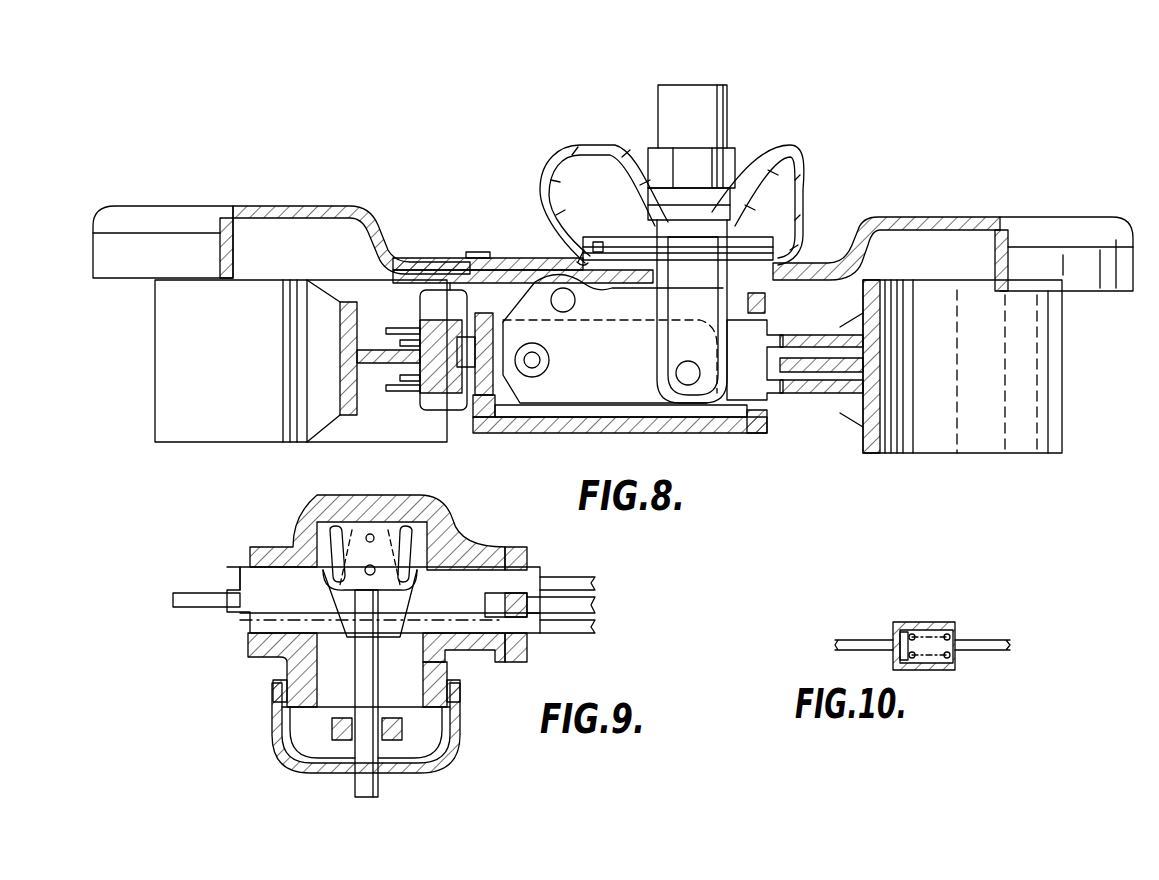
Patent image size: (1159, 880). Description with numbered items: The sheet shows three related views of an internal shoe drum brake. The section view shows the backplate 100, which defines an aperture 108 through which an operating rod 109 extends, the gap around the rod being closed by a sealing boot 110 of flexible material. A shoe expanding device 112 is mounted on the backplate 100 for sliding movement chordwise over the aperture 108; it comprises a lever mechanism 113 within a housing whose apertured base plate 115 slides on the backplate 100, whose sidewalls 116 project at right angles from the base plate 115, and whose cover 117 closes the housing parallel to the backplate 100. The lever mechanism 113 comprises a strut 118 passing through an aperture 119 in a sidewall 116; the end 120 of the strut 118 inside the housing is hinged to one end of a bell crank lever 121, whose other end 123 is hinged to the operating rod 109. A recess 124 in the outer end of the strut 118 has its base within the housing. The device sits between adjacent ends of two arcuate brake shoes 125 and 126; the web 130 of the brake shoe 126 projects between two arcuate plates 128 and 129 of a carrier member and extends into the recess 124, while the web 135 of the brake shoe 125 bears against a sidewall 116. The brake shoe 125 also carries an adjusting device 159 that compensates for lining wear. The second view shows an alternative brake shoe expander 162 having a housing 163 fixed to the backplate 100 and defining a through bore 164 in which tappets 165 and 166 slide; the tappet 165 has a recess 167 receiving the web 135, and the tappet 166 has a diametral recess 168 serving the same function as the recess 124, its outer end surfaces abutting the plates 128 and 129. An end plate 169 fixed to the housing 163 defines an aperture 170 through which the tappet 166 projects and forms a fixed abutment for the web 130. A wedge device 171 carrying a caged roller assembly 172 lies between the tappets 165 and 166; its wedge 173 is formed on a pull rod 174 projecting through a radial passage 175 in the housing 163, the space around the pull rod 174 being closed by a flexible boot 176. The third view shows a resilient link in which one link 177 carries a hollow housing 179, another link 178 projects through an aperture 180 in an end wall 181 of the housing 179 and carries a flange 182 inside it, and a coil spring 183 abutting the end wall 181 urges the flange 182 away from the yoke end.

In FIG. 8, the backplate 100 is at (448, 259).
In FIG. 8, the aperture 108 is at (505, 270).
In FIG. 8, the operating rod 109 is at (705, 116).
In FIG. 8, the sealing boot 110 is at (803, 176).
In FIG. 8, the shoe expanding device 112 is at (815, 246).
In FIG. 8, the lever mechanism 113 is at (618, 389).
In FIG. 8, the base plate 115 is at (393, 277).
In FIG. 8, the sidewalls 116 is at (490, 433).
In FIG. 8, the cover 117 is at (640, 432).
In FIG. 8, the strut 118 is at (770, 322).
In FIG. 8, the aperture 119 is at (752, 430).
In FIG. 8, the end of the strut 120 is at (540, 366).
In FIG. 8, the bell crank lever 121 is at (535, 284).
In FIG. 8, the other end of the bell crank lever 123 is at (690, 385).
In FIG. 8, the recess 124 is at (770, 402).
In FIG. 8, the arcuate brake shoe 125 is at (326, 369).
In FIG. 8, the arcuate brake shoe 126 is at (880, 396).
In FIG. 8, the arcuate plate 128 is at (817, 337).
In FIG. 9, the arcuate plate 128 is at (580, 581).
In FIG. 8, the arcuate plate 129 is at (832, 395).
In FIG. 9, the arcuate plate 129 is at (578, 640).
In FIG. 8, the web 130 is at (840, 368).
In FIG. 9, the web 130 is at (590, 606).
In FIG. 8, the web 135 is at (377, 350).
In FIG. 9, the web 135 is at (206, 595).
In FIG. 8, the adjusting device 159 is at (435, 395).
In FIG. 9, the brake shoe expander 162 is at (452, 543).
In FIG. 9, the housing 163 is at (322, 506).
In FIG. 9, the through bore 164 is at (290, 546).
In FIG. 9, the tappet 165 is at (245, 580).
In FIG. 9, the tappet 166 is at (460, 660).
In FIG. 9, the recess 167 is at (245, 640).
In FIG. 9, the diametral recess 168 is at (508, 662).
In FIG. 9, the end plate 169 is at (525, 558).
In FIG. 9, the aperture 170 is at (522, 650).
In FIG. 9, the wedge device 171 is at (360, 592).
In FIG. 9, the caged roller assembly 172 is at (410, 520).
In FIG. 9, the wedge 173 is at (370, 520).
In FIG. 9, the pull rod 174 is at (355, 760).
In FIG. 9, the radial passage 175 is at (278, 690).
In FIG. 9, the boot 176 is at (458, 748).
In FIG. 10, the link 177 is at (868, 652).
In FIG. 10, the link 178 is at (1000, 652).
In FIG. 10, the hollow housing 179 is at (915, 625).
In FIG. 10, the aperture 180 is at (960, 640).
In FIG. 10, the end wall 181 is at (950, 655).
In FIG. 10, the flange 182 is at (900, 640).
In FIG. 10, the coil spring 183 is at (932, 633).